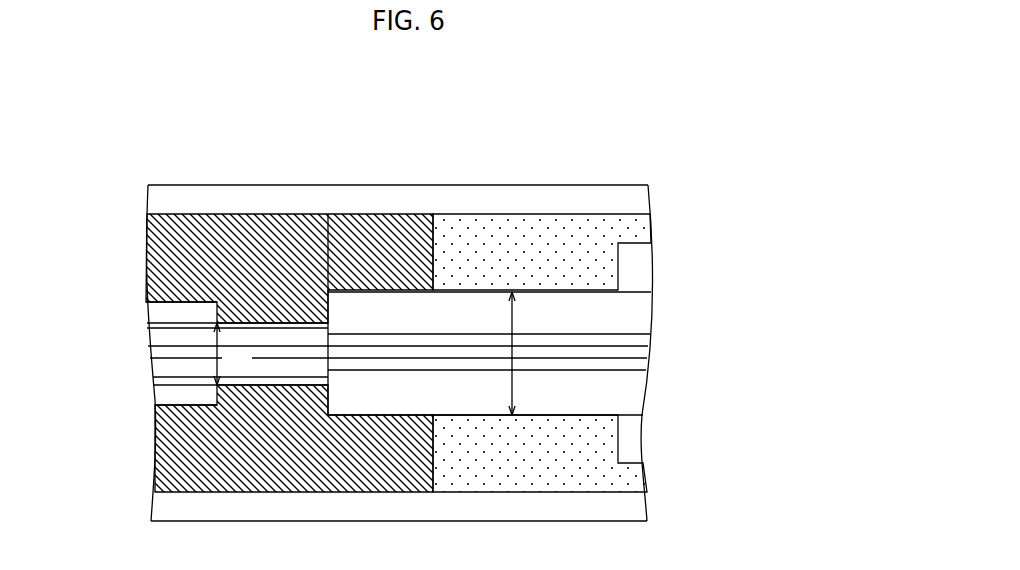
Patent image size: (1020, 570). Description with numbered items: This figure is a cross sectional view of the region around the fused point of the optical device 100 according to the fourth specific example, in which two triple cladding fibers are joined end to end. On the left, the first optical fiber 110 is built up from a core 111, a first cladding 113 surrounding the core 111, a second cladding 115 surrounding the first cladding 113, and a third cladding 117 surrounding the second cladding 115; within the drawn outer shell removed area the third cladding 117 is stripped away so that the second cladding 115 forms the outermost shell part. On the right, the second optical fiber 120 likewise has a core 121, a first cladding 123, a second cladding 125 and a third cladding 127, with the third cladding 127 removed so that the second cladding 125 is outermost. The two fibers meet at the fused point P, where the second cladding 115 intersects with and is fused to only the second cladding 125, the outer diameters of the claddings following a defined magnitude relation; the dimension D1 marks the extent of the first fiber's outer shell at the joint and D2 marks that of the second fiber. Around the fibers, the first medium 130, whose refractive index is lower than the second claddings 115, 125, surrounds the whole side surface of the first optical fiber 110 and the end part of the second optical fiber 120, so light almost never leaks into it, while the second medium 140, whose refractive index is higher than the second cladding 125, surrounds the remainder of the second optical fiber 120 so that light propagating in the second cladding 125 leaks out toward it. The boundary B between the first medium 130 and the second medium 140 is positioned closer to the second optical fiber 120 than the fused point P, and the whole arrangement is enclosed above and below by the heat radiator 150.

The optical device 100 is at (752, 143).
The first optical fiber 110 is at (181, 327).
The core 111 is at (150, 346).
The first cladding 113 is at (151, 363).
The second cladding 115 is at (152, 380).
The third cladding 117 is at (207, 411).
The second optical fiber 120 is at (553, 366).
The core 121 is at (638, 352).
The first cladding 123 is at (637, 358).
The second cladding 125 is at (637, 390).
The third cladding 127 is at (638, 428).
The first medium 130 is at (148, 233).
The second medium 140 is at (655, 228).
The heat radiator 150 is at (541, 195).
The fused point P is at (327, 287).
The boundary B is at (433, 212).
The first thickness D1 is at (231, 354).
The second thickness D2 is at (528, 353).